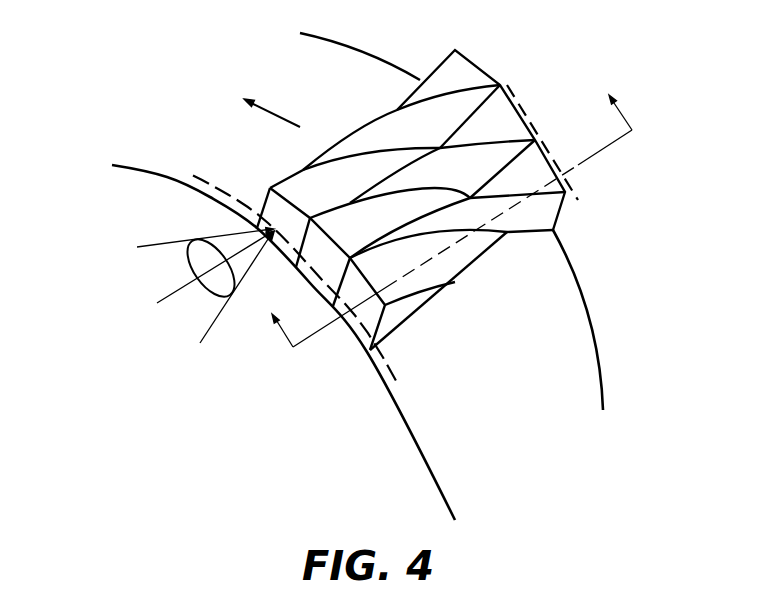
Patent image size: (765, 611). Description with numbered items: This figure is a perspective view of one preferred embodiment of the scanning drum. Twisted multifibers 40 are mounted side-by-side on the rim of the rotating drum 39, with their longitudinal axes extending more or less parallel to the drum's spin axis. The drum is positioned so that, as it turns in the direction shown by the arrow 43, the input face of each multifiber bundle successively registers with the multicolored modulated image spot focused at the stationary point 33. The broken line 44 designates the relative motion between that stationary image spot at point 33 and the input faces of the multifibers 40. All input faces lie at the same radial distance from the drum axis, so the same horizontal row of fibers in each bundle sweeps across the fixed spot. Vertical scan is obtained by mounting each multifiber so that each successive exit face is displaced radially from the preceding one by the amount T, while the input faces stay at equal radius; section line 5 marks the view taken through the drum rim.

The multifibers 40 is at (452, 52).
The arrow 43 is at (283, 116).
The stationary point 33 is at (272, 238).
The rotating drum 39 is at (347, 409).
The broken line 44 is at (393, 368).
The section line 5- 5 is at (446, 213).
The radial displacement T is at (538, 133).